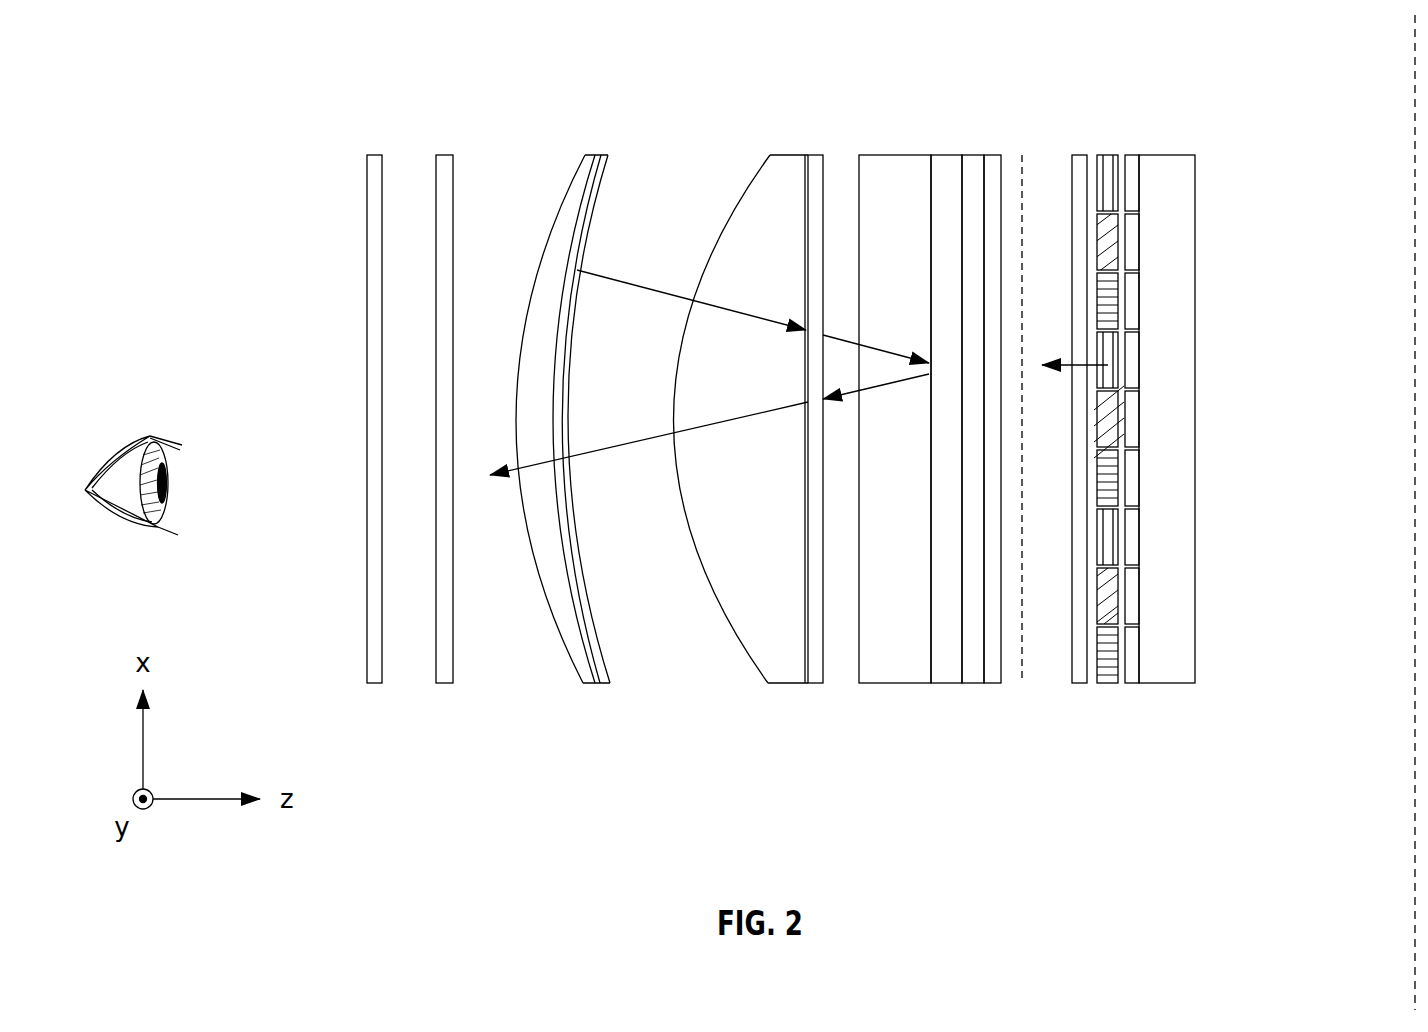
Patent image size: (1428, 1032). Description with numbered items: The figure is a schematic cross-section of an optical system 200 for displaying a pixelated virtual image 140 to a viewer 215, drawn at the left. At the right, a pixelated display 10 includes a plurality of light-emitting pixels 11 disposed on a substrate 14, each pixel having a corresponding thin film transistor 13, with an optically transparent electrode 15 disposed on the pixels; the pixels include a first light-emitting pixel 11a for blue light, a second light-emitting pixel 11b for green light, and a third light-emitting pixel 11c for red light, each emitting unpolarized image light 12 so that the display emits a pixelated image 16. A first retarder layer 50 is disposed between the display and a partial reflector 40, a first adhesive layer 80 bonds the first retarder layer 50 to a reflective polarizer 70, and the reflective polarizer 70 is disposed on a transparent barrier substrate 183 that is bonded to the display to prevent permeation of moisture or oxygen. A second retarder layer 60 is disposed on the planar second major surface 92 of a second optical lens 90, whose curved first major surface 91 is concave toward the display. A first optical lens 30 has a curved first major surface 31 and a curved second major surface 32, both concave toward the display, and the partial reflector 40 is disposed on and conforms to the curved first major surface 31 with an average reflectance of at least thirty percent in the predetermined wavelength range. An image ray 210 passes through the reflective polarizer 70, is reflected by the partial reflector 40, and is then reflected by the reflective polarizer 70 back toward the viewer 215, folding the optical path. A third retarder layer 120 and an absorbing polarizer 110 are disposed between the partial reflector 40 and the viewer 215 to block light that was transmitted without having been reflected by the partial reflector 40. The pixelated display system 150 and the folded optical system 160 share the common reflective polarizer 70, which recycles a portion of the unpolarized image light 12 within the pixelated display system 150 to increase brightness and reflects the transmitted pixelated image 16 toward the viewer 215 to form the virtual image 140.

The optical system 200 is at (230, 122).
The viewer 215 is at (147, 533).
The absorbing polarizer 110 is at (375, 162).
The third retarder layer 120 is at (446, 162).
The first optical lens 30 is at (584, 386).
The curved first major surface 31 is at (578, 222).
The second major surface 32 is at (562, 648).
The partial reflector 40 is at (611, 166).
The image ray 210 is at (608, 278).
The second retarder layer 60 is at (818, 162).
The reflective polarizer 70 is at (946, 162).
The first retarder layer 50 is at (997, 162).
The first adhesive layer 80 is at (970, 670).
The transparent barrier substrate 183 is at (885, 670).
The second optical lens 90 is at (745, 447).
The curved first major surface 91 is at (742, 655).
The planar second major surface 92 is at (805, 570).
The pixelated image 16 is at (1025, 163).
The unpolarized image light 12 is at (1060, 363).
The pixelated display 10 is at (1144, 403).
The light-emitting pixel 11 is at (1105, 652).
The first light-emitting pixel 11a is at (1108, 470).
The second light-emitting pixel 11b is at (1108, 415).
The third light-emitting pixel 11c is at (1108, 370).
The thin film transistor 13 is at (1133, 165).
The substrate 14 is at (1178, 192).
The optically transparent electrode 15 is at (1080, 668).
The pixelated display system 150 is at (1099, 434).
The folded optical system 160 is at (362, 808).
The pixelated virtual image 140 is at (1413, 172).